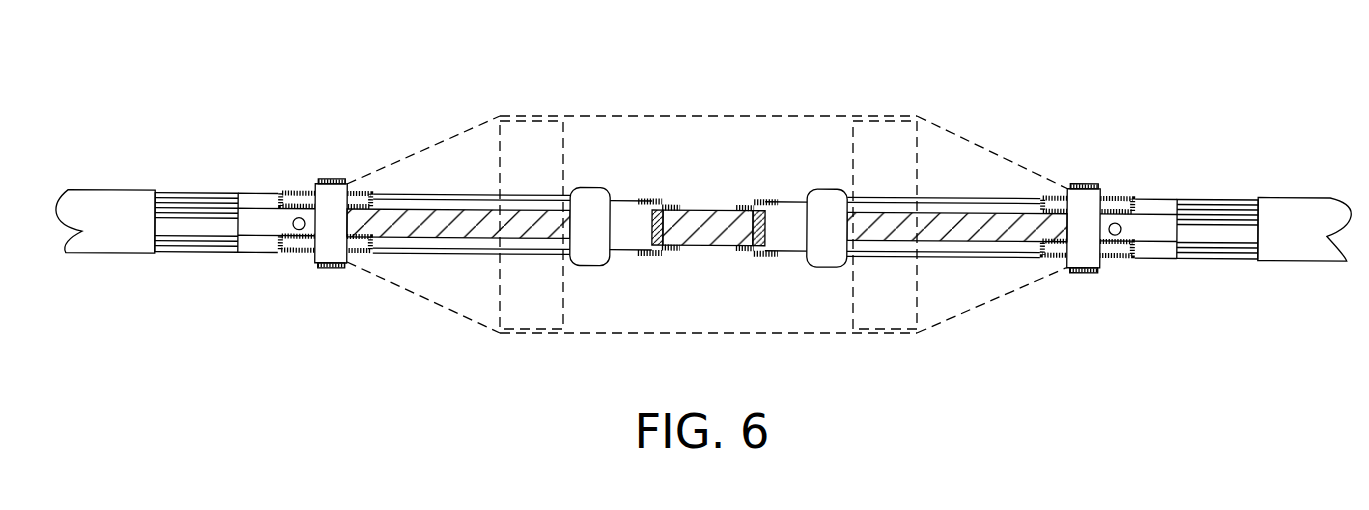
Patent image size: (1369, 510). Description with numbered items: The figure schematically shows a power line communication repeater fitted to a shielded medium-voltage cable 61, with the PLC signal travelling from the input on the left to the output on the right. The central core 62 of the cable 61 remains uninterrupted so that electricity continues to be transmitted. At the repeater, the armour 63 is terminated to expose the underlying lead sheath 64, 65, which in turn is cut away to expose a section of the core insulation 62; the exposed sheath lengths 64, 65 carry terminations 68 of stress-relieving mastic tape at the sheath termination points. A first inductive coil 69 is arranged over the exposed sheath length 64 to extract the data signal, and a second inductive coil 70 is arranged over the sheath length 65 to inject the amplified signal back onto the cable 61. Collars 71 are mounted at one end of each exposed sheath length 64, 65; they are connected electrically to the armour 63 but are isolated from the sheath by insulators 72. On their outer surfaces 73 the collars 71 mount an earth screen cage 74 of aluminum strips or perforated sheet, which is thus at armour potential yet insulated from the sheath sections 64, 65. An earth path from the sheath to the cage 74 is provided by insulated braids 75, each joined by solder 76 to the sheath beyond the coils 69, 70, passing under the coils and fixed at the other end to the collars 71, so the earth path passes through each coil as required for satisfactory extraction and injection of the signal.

The cable 61 is at (110, 190).
The central core 62 is at (715, 220).
The armour 63 is at (193, 196).
The lead sheath 64 is at (428, 193).
The lead sheath 65 is at (980, 197).
The terminations 68 is at (657, 256).
The first inductive coil 69 is at (537, 313).
The second inductive coil 70 is at (883, 315).
The collars 71 is at (320, 296).
The insulators 72 is at (288, 254).
The outer surfaces 73 is at (330, 177).
The earth screen cage 74 is at (945, 128).
The insulated braids 75 is at (450, 224).
The solder 76 is at (592, 248).